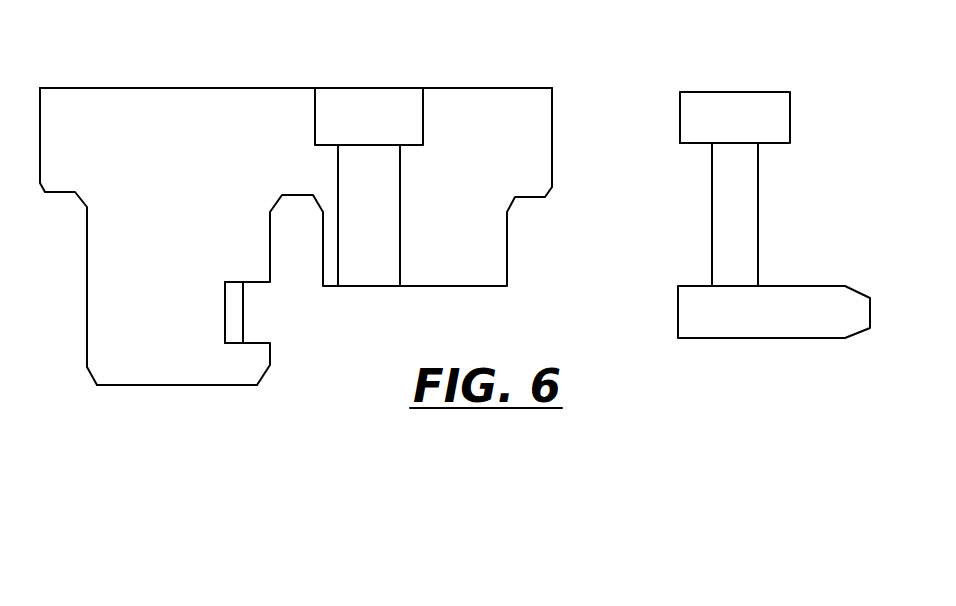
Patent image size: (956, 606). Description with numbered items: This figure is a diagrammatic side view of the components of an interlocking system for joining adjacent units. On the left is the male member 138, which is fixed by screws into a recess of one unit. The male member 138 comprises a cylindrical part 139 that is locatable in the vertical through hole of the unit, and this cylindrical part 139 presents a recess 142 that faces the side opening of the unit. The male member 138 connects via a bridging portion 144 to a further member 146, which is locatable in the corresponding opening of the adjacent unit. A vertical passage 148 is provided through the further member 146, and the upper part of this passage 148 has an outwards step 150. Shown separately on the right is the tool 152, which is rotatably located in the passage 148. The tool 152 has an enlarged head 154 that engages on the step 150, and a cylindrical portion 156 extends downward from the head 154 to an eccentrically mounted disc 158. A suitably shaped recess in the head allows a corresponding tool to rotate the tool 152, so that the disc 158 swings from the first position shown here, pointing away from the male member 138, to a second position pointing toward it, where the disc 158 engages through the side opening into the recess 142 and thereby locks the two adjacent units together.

The male member 138 is at (42, 190).
The cylindrical part 139 is at (130, 365).
The recess 142 is at (243, 318).
The bridging portion 144 is at (283, 105).
The further member 146 is at (490, 105).
The vertical passage 148 is at (392, 112).
The outwards step 150 is at (340, 138).
The tool 152 is at (737, 98).
The enlarged head 154 is at (690, 107).
The cylindrical portion 156 is at (735, 208).
The eccentrically mounted disc 158 is at (770, 318).